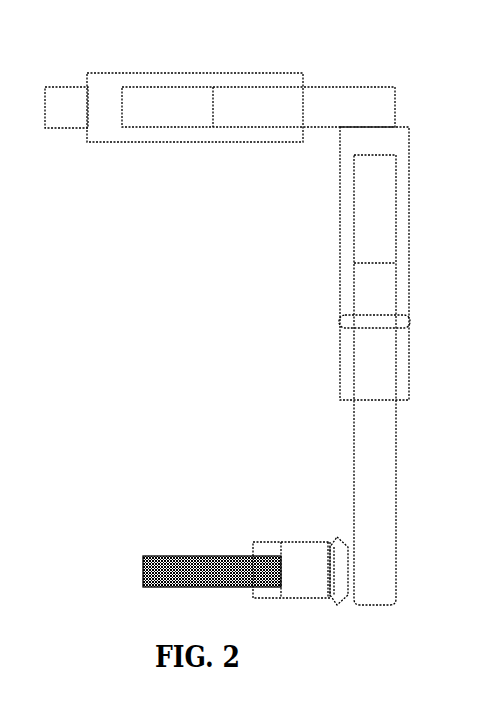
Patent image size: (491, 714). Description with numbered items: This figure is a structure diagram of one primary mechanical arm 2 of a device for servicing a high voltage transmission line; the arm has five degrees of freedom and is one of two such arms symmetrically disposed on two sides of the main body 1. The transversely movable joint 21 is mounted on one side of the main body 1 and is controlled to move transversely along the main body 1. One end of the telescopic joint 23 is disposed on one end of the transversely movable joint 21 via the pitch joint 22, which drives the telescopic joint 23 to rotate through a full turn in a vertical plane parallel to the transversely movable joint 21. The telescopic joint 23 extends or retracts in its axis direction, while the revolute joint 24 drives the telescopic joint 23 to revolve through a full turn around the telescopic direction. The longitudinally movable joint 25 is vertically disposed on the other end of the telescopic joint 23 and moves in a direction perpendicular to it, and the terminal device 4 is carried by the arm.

The main body 1 is at (183, 555).
The primary mechanical arm 2 is at (215, 284).
The terminal device 4 is at (63, 100).
The transversely movable joint 21 is at (281, 542).
The pitch joint 22 is at (342, 538).
The telescopic joint 23 is at (334, 243).
The revolute joint 24 is at (341, 324).
The longitudinally movable joint 25 is at (213, 88).